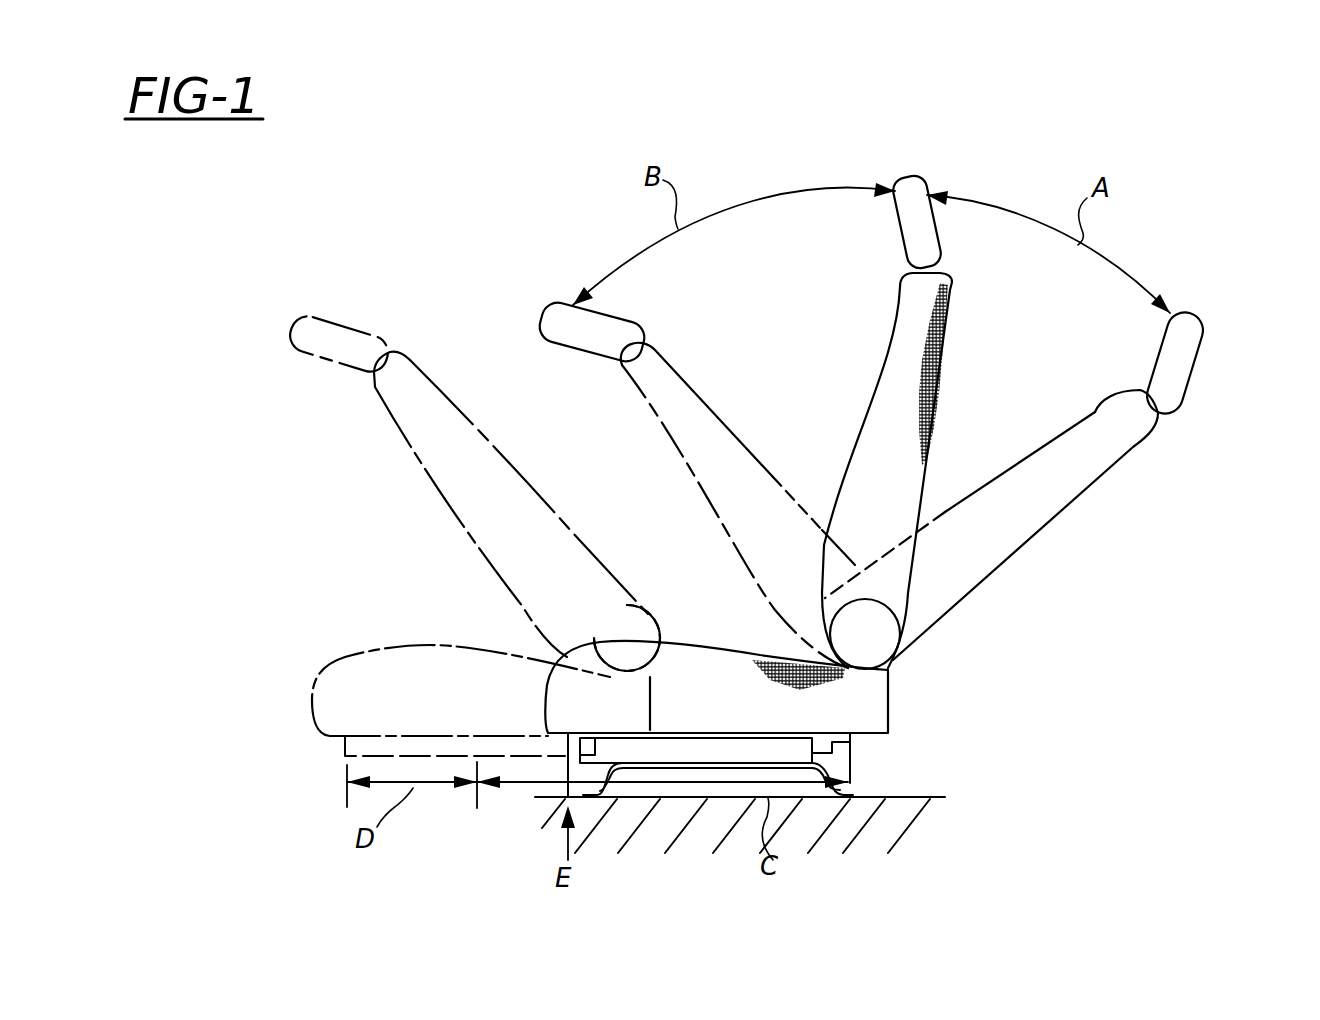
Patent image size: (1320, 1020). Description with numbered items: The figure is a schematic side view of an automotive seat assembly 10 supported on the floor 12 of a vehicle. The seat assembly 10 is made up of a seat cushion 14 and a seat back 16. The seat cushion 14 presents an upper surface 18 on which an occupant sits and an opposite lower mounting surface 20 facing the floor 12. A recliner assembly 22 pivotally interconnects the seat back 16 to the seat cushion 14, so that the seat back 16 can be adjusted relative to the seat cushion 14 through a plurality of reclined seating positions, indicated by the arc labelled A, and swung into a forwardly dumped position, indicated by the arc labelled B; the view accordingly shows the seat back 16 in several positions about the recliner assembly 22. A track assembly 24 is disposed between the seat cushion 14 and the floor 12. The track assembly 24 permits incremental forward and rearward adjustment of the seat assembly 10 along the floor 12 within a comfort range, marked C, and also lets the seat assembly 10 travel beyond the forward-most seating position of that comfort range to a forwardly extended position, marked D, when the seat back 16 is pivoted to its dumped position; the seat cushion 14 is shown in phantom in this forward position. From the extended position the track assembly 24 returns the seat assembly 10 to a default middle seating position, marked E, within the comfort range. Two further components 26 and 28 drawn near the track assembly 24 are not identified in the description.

The seat assembly 10 is at (1198, 236).
The floor 12 is at (913, 796).
The seat cushion 14 is at (317, 677).
The seat back 16 is at (517, 470).
The upper surface 18 is at (432, 647).
The lower mounting surface 20 is at (330, 740).
The recliner assembly 22 is at (648, 614).
The track assembly 24 is at (517, 800).
The riser 26 is at (690, 747).
The latch 28 is at (847, 742).